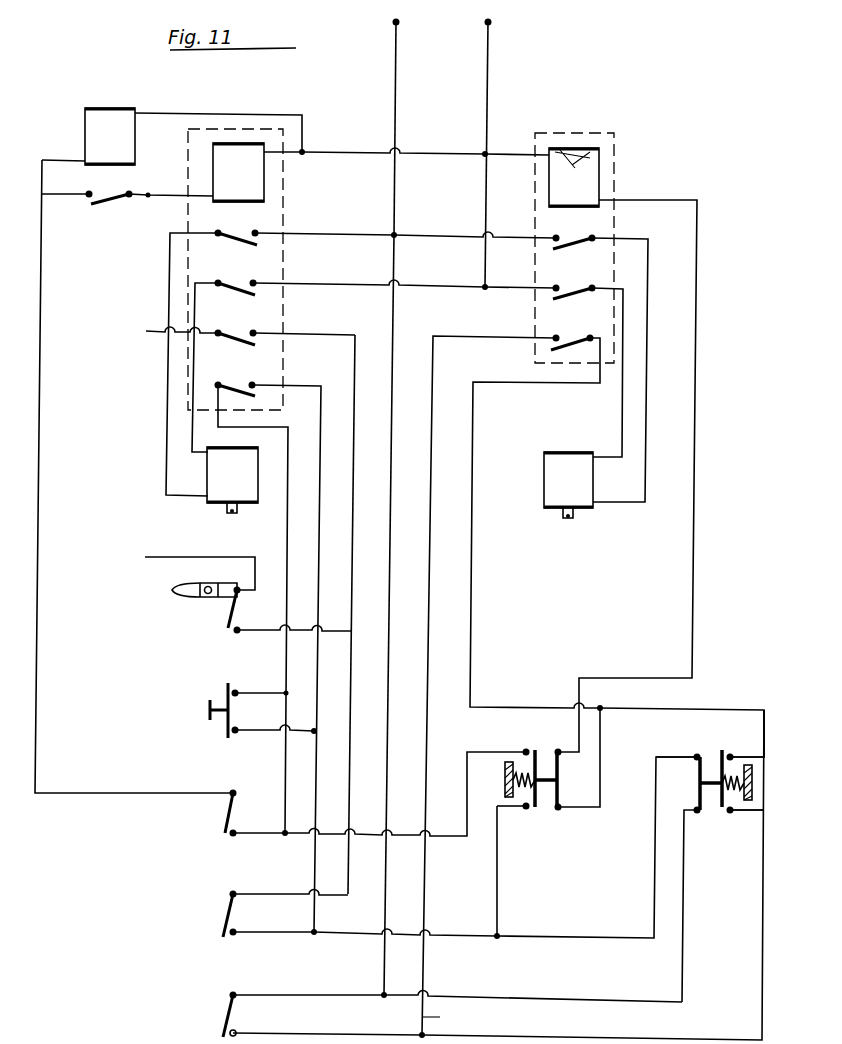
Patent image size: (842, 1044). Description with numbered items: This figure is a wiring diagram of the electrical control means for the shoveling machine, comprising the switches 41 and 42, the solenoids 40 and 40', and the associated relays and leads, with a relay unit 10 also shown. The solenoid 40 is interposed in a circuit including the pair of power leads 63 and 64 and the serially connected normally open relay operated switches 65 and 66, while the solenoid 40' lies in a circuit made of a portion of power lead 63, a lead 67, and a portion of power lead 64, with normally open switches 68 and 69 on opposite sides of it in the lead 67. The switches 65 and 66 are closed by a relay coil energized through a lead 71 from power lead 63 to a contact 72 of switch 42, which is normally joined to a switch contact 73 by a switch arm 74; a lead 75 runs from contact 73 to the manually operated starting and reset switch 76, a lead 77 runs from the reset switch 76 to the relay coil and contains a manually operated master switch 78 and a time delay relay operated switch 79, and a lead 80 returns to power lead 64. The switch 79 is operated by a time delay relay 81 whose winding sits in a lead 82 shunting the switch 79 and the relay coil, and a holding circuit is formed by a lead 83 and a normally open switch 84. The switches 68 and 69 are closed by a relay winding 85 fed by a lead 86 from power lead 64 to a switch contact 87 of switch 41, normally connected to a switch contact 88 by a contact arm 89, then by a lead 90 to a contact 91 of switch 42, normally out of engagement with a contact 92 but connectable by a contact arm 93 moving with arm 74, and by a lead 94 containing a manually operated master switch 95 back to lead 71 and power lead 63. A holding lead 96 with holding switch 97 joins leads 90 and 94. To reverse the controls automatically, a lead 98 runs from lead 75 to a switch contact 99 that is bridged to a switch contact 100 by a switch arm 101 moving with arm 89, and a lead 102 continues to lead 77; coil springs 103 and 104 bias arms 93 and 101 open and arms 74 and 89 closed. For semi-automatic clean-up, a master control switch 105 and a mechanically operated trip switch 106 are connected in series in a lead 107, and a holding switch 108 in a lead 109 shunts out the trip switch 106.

The timer unit 10 is at (246, 185).
The solenoid 40 is at (232, 480).
The solenoid 40' is at (568, 485).
The switch 41 is at (549, 762).
The switch 42 is at (713, 760).
The power lead 63 is at (396, 75).
The power lead 64 is at (488, 104).
The normally open relay operated switch 65 is at (242, 230).
The normally open relay operated switch 66 is at (240, 280).
The lead 67 is at (458, 224).
The normally open relay operated switch 68 is at (567, 236).
The normally open relay operated switch 69 is at (567, 286).
The lead 71 is at (390, 406).
The contact 72 is at (694, 814).
The switch contact 73 is at (694, 753).
The switch arm 74 is at (698, 780).
The lead 75 is at (242, 733).
The manually operated starting and reset switch 76 is at (215, 722).
The lead 77 is at (180, 190).
The manually operated master switch 78 is at (224, 818).
The time delay relay operated switch 79 is at (102, 198).
The lead 80 is at (298, 156).
The time delay relay 81 is at (118, 147).
The lead 82 is at (42, 170).
The lead 83 is at (286, 532).
The normally open switch 84 is at (237, 382).
The relay winding 85 is at (582, 192).
The lead 86 is at (698, 298).
The switch contact 87 is at (560, 750).
The switch contact 88 is at (560, 810).
The contact arm 89 is at (558, 782).
The lead 90 is at (618, 710).
The contact 91 is at (732, 754).
The switch contact 92 is at (731, 813).
The contact arm 93 is at (720, 810).
The lead 94 is at (316, 988).
The manually operated master switch 95 is at (225, 1010).
The lead 96 is at (482, 337).
The holding switch 97 is at (567, 336).
The lead 98 is at (498, 884).
The switch contact 99 is at (525, 811).
The switch contact 100 is at (524, 750).
The switch arm 101 is at (537, 810).
The lead 102 is at (290, 838).
The coil spring 103 is at (754, 782).
The coil spring 104 is at (506, 790).
The master control switch 105 is at (225, 912).
The mechanically operated trip switch 106 is at (237, 606).
The lead 107 is at (146, 300).
The holding switch 108 is at (242, 323).
The lead 109 is at (340, 323).